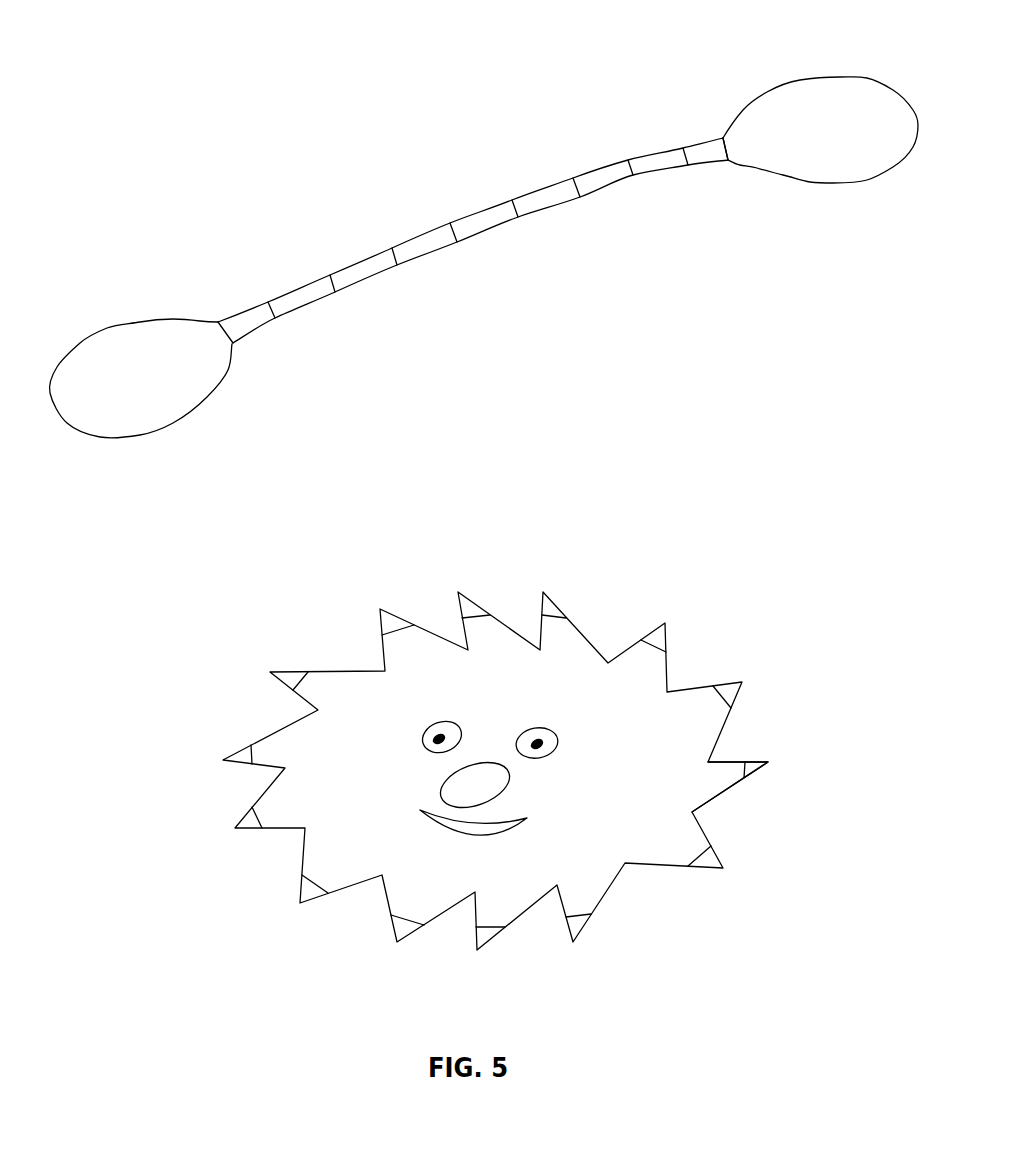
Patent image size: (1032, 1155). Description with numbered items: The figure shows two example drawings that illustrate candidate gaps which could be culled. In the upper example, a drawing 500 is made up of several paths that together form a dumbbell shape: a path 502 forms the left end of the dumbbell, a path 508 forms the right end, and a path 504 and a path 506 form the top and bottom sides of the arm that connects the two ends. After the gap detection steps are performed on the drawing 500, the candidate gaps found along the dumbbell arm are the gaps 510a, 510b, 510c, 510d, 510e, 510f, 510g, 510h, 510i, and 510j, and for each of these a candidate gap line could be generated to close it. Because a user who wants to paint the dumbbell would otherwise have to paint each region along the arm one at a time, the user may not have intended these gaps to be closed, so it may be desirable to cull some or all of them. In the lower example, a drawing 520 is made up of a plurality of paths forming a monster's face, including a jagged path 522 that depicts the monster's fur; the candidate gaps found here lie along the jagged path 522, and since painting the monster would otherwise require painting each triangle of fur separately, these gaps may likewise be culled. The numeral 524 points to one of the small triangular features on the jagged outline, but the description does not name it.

The drawing 500 is at (160, 154).
The path 502 is at (120, 323).
The path 504 is at (450, 222).
The path 506 is at (608, 192).
The path 508 is at (850, 77).
The gap 510a is at (223, 321).
The gap 510b is at (273, 300).
The gap 510c is at (334, 274).
The gap 510d is at (396, 247).
The gap 510e is at (454, 222).
The gap 510f is at (516, 199).
The gap 510g is at (577, 177).
The gap 510h is at (632, 160).
The gap 510i is at (687, 148).
The gap 510j is at (725, 146).
The drawing 520 is at (660, 538).
The jagged path 522 is at (743, 778).
The spike tip cross line 524 is at (726, 698).